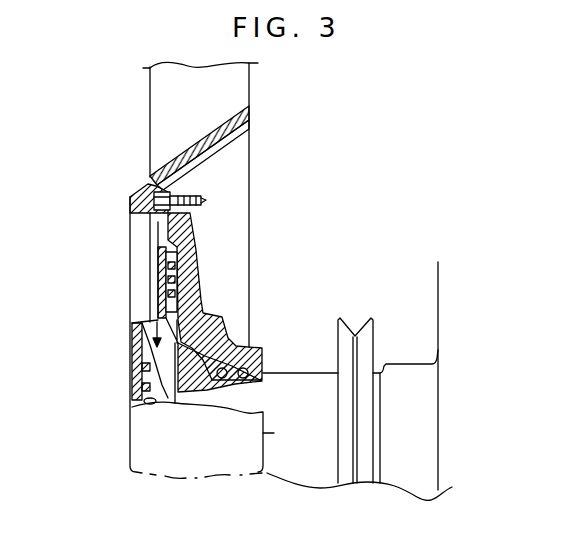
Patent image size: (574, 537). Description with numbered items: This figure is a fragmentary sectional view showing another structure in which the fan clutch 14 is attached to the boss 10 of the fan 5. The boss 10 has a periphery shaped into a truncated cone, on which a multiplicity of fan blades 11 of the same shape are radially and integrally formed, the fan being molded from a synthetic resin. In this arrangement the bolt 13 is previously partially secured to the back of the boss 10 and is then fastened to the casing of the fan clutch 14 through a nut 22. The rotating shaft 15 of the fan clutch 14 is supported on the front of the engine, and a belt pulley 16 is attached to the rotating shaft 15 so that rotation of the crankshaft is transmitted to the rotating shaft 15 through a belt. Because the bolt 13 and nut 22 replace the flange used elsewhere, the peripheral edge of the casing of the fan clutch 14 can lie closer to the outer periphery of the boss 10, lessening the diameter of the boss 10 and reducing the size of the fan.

The fan 5 is at (249, 121).
The boss 10 is at (150, 182).
The fan blades 11 is at (160, 129).
The bolt 13 is at (207, 202).
The fan clutch 14 is at (207, 263).
The rotating shaft 15 is at (293, 372).
The belt pulley 16 is at (373, 337).
The nut 22 is at (204, 197).